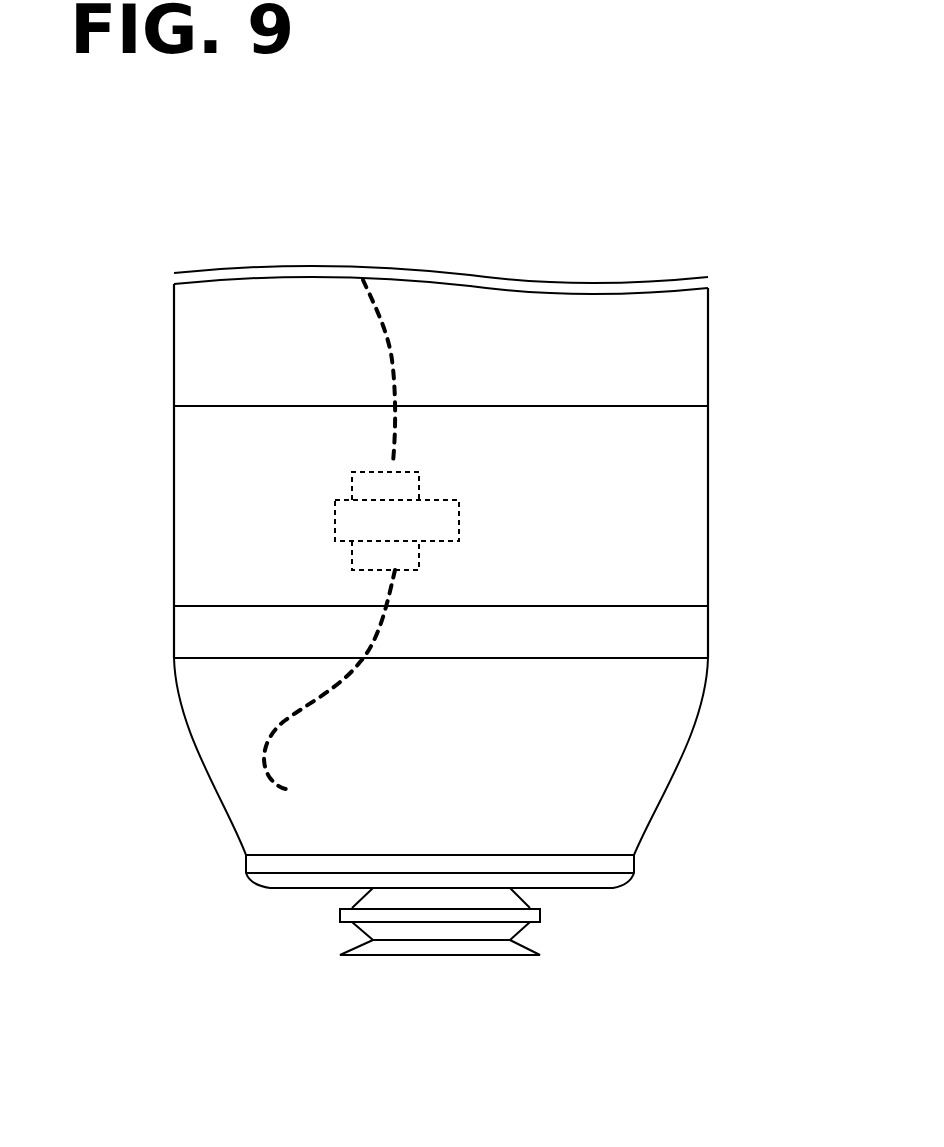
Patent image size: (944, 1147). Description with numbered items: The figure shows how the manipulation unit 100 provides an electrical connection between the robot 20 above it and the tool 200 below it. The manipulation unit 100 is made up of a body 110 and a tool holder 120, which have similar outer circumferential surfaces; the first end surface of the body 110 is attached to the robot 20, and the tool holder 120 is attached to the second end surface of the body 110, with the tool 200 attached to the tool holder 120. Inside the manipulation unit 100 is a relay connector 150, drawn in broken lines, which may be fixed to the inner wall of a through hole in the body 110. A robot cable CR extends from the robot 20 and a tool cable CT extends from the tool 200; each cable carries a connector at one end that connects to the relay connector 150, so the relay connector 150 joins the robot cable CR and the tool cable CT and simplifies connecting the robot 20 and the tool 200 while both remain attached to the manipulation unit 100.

The robot 20 is at (680, 328).
The manipulation unit 100 is at (515, 532).
The body 110 is at (695, 524).
The tool holder 120 is at (478, 613).
The relay connector 150 is at (459, 522).
The tool 200 is at (637, 747).
The robot cable CR is at (397, 360).
The tool cable CT is at (333, 688).